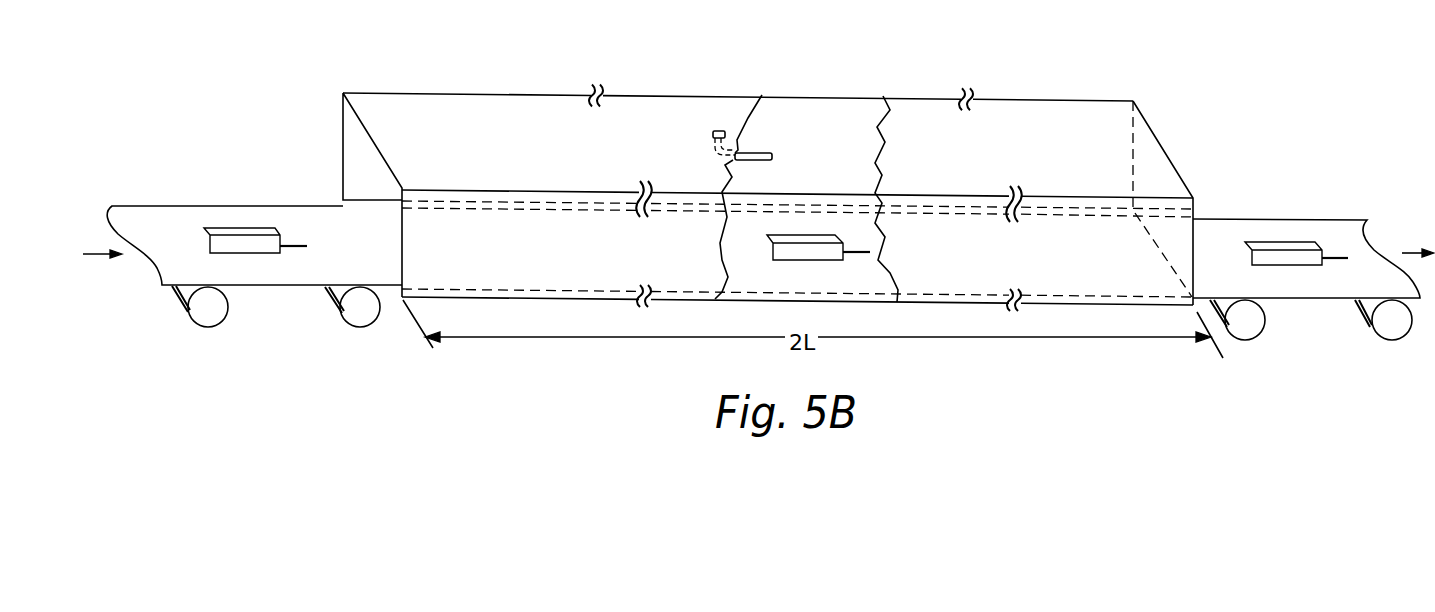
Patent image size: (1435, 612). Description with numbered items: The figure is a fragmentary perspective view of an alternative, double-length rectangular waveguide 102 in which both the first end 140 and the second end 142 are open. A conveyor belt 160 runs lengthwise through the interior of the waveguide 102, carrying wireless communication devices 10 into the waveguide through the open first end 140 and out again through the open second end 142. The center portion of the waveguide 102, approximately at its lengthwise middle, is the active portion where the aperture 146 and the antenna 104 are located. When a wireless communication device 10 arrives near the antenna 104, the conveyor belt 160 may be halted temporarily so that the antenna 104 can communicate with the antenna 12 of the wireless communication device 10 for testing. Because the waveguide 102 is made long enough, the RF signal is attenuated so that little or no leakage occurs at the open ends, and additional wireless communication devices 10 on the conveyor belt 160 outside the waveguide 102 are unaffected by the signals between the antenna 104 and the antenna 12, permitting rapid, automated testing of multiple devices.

The wireless communication device 10 is at (263, 254).
The antenna 12 is at (292, 248).
The waveguide 102 is at (734, 175).
The antenna 104 is at (762, 152).
The first end 140 is at (352, 150).
The second end 142 is at (1155, 160).
The aperture 146 is at (717, 131).
The conveyor belt 160 is at (390, 290).